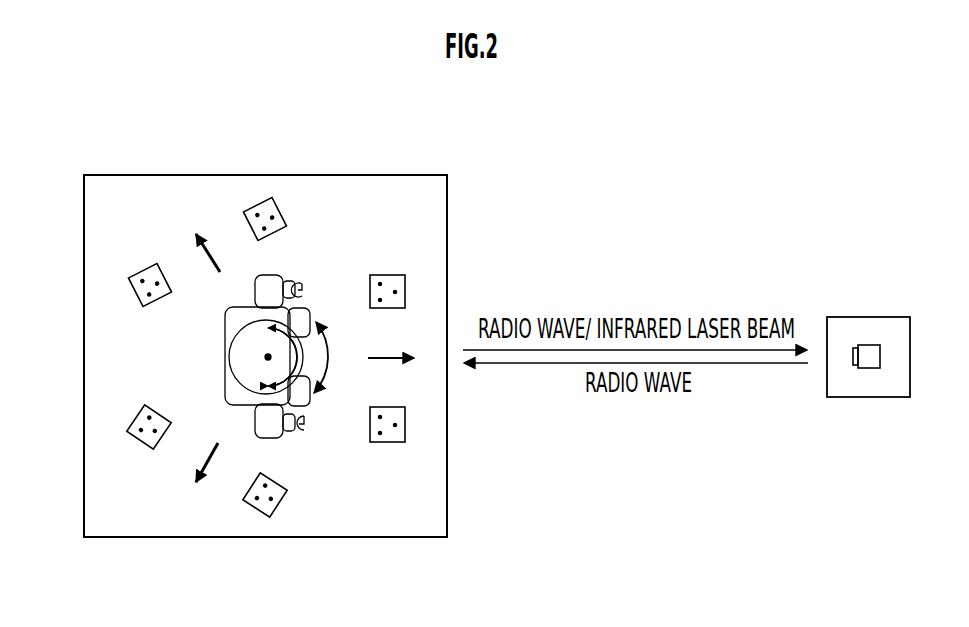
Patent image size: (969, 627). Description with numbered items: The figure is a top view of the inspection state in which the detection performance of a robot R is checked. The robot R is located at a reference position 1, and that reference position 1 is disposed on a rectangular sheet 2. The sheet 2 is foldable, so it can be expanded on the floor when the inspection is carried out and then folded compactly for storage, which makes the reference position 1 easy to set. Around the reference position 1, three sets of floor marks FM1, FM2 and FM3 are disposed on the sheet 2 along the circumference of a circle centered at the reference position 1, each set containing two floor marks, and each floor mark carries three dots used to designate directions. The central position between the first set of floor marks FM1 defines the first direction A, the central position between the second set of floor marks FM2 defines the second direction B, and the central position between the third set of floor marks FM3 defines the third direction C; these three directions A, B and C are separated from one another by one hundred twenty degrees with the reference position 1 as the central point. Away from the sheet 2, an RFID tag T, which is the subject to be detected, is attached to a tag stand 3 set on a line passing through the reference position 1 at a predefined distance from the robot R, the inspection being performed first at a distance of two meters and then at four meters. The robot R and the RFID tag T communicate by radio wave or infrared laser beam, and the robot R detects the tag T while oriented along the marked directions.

The reference position 1 is at (265, 357).
The sheet 2 is at (431, 190).
The tag stand 3 is at (866, 345).
The RFID tag T is at (853, 357).
The first set of floor marks FM1 is at (386, 263).
The second set of floor marks FM2 is at (122, 436).
The third set of floor marks FM3 is at (122, 275).
The robot R is at (302, 262).
The first direction A is at (400, 360).
The second direction B is at (203, 478).
The third direction C is at (205, 238).